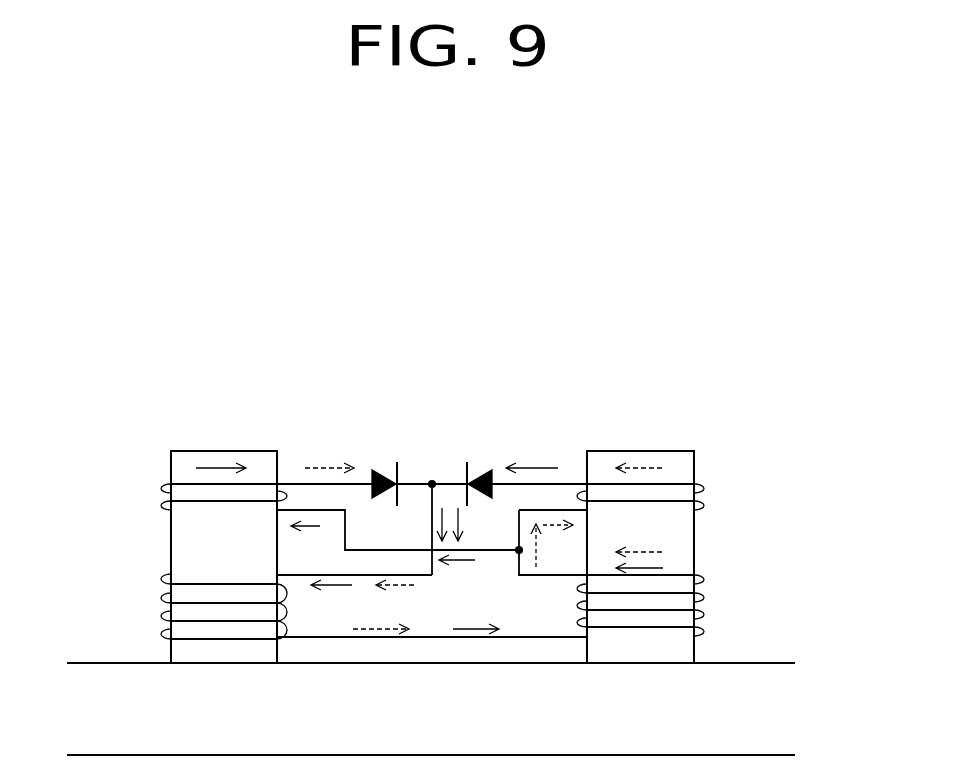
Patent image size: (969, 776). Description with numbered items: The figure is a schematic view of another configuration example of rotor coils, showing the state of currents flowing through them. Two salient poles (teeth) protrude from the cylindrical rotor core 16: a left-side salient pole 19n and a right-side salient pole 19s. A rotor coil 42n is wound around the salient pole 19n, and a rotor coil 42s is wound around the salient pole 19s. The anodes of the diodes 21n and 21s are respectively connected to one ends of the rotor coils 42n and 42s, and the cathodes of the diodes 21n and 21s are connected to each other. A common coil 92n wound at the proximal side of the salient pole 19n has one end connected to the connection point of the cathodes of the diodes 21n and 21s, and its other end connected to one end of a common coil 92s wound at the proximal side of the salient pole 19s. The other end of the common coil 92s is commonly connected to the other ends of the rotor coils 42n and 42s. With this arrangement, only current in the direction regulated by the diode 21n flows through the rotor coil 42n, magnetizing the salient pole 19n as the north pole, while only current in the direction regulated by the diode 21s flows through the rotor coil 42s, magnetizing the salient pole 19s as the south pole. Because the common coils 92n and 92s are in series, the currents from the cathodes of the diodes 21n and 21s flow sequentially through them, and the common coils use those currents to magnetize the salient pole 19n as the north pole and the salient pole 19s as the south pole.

The rotor core 16 is at (752, 710).
The salient pole 19n is at (180, 451).
The salient pole 19s is at (677, 451).
The rotor coil 42n is at (160, 489).
The rotor coil 42s is at (706, 490).
The common coil 92n is at (160, 616).
The common coil 92s is at (705, 610).
The diode 21n is at (385, 470).
The diode 21s is at (480, 470).